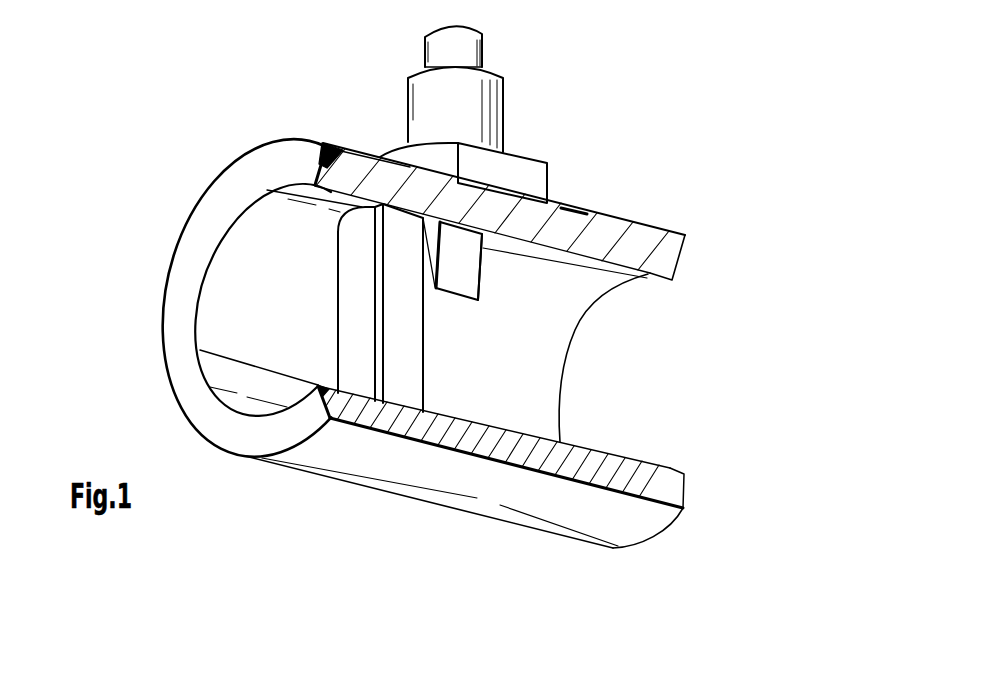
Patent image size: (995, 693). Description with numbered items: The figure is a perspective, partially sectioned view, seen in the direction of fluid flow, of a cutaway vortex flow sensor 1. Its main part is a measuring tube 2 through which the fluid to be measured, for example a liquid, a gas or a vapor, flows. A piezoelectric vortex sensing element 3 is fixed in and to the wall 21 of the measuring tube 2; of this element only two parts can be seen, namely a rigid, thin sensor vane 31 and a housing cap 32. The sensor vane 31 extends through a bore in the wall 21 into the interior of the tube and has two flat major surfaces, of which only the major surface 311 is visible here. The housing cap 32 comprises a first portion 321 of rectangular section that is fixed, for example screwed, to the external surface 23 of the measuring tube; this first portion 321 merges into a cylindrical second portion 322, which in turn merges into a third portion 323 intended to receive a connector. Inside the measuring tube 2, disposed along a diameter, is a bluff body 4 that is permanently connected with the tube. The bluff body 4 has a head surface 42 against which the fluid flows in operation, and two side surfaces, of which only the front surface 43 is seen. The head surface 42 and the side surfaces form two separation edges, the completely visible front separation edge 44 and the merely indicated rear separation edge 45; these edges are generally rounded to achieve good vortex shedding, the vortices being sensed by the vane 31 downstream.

The vortex flow sensor 1 is at (237, 100).
The measuring tube 2 is at (333, 457).
The wall 21 is at (290, 147).
The external surface 23 is at (210, 187).
The vortex sensing element 3 is at (518, 98).
The sensor vane 31 is at (472, 303).
The major surface 311 is at (472, 270).
The housing cap 32 is at (548, 178).
The first portion 321 is at (526, 165).
The second portion 322 is at (415, 100).
The third portion 323 is at (477, 47).
The bluff body 4 is at (335, 294).
The head surface 42 is at (347, 247).
The front surface 43 is at (413, 352).
The front separation edge 44 is at (380, 337).
The rear separation edge 45 is at (337, 270).